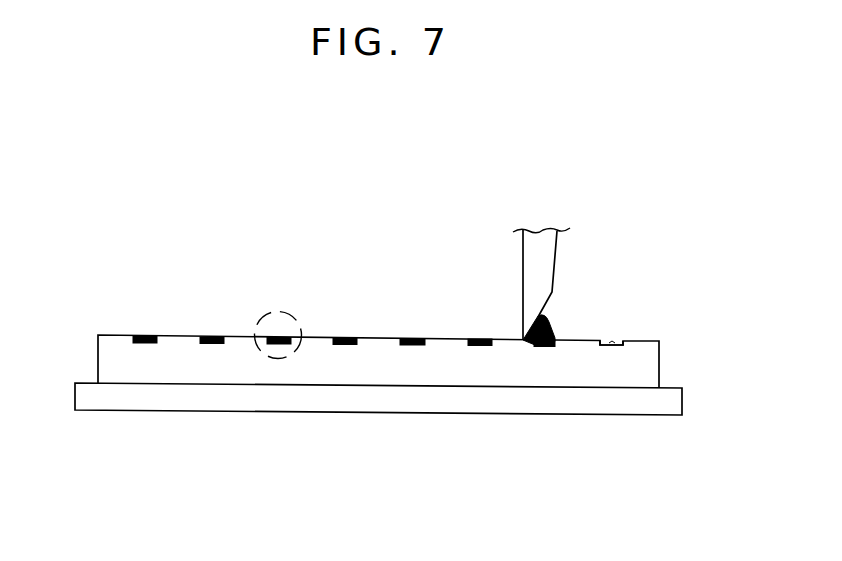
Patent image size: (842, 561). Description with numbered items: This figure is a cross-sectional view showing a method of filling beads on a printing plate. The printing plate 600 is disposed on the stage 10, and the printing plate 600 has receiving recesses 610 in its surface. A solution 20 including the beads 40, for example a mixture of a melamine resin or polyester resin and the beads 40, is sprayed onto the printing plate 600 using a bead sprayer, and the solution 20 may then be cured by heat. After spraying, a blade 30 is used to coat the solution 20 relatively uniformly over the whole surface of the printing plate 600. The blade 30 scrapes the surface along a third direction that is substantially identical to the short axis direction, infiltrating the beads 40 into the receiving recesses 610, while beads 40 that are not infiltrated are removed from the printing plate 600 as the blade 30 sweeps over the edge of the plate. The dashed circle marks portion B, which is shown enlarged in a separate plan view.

The stage 10 is at (682, 400).
The solution 20 is at (553, 340).
The blade 30 is at (523, 256).
The beads 40 is at (548, 323).
The printing plate 600 is at (543, 380).
The receiving recesses 610 is at (612, 344).
The portion B is at (267, 310).